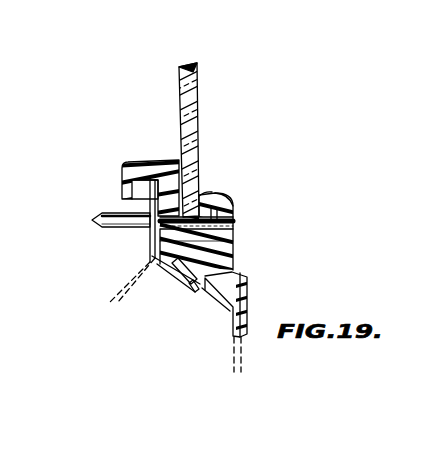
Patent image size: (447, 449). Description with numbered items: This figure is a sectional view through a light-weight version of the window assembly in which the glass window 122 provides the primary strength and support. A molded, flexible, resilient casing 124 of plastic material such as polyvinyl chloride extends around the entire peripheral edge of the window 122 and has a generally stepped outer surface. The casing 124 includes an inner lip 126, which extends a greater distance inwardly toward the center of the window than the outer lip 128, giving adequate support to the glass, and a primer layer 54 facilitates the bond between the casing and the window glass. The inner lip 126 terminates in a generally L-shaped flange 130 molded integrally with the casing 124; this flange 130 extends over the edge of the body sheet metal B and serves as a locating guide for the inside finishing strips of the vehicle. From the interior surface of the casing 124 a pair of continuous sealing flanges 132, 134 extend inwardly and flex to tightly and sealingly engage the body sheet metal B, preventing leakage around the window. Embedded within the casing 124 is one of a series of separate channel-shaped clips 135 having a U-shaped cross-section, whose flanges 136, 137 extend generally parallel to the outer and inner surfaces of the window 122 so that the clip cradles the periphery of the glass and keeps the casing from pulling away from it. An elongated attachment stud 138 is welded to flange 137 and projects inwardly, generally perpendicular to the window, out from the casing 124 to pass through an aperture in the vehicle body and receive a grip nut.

The window 122 is at (197, 93).
The L-shaped flange 130 is at (123, 162).
The inner lip 126 is at (165, 192).
The casing 124 is at (243, 222).
The sealing flange 132 is at (192, 287).
The sealing flange 134 is at (168, 270).
The attachment stud 138 is at (92, 218).
The flange 137 is at (150, 226).
The body sheet metal B is at (122, 290).
The flange 136 is at (222, 207).
The primer layer 54 is at (206, 192).
The outer lip 128 is at (235, 197).
The clip 135 is at (220, 241).